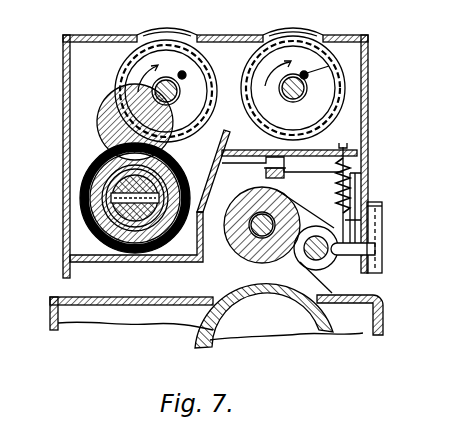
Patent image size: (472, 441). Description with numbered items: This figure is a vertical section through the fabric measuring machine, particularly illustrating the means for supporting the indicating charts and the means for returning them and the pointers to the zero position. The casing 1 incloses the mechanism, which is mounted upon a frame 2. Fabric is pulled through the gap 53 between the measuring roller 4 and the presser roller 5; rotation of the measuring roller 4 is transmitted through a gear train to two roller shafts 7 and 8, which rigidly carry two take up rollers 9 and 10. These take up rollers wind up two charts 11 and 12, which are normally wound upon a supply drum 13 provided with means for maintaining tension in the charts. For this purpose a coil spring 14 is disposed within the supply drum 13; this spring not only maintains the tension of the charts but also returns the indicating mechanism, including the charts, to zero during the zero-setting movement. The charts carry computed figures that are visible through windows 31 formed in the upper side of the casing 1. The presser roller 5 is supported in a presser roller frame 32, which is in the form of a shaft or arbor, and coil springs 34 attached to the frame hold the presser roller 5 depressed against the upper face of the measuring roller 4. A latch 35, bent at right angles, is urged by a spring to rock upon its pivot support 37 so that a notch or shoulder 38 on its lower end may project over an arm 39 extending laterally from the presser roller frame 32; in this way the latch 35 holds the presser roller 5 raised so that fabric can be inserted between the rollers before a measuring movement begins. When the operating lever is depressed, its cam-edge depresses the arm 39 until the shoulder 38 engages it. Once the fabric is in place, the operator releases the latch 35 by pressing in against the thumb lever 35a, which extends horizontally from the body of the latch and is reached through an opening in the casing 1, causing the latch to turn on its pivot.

The casing 1 is at (50, 320).
The frame 2 is at (63, 103).
The measuring roller 4 is at (210, 294).
The presser roller 5 is at (243, 253).
The roller shaft 7 is at (164, 105).
The roller shaft 8 is at (291, 102).
The take up roller 9 is at (187, 73).
The take up roller 10 is at (306, 70).
The chart 11 is at (137, 137).
The chart 12 is at (227, 143).
The supply drum 13 is at (82, 201).
The coil spring 14 is at (86, 220).
The window 31 is at (158, 29).
The presser roller frame 32 is at (322, 270).
The coil spring 34 is at (324, 196).
The latch 35 is at (257, 186).
The thumb lever 35a is at (361, 252).
The pivot support 37 is at (222, 160).
The shoulder 38 is at (338, 221).
The arm 39 is at (343, 258).
The gap 53 is at (267, 270).